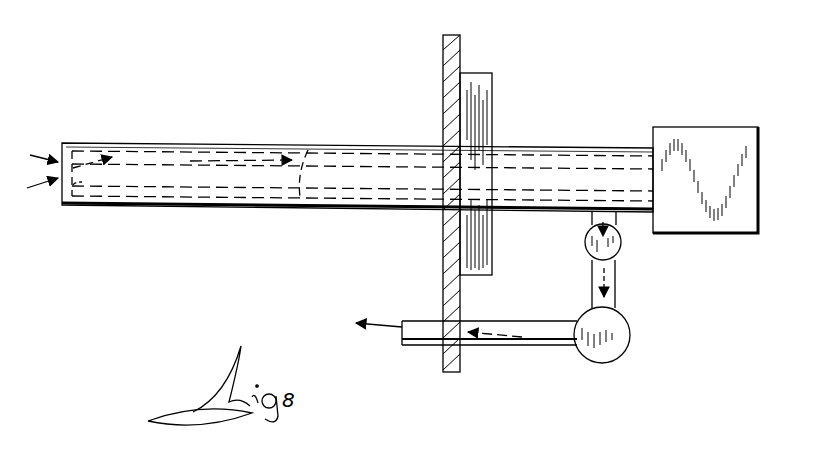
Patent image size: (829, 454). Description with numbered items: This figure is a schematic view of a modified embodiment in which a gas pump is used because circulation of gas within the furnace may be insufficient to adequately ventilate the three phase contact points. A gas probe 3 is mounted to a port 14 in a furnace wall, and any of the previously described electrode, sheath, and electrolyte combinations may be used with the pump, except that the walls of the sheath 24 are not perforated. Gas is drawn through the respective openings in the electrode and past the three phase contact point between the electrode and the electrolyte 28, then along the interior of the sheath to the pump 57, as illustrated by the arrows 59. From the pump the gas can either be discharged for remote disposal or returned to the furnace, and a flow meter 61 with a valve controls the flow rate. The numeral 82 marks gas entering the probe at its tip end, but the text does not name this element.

The gas probe 3 is at (166, 119).
The port 14 is at (443, 52).
The sheath 24 is at (228, 145).
The electrolyte 28 is at (118, 160).
The arrows 59 is at (296, 118).
The flow meter 61 is at (606, 247).
The pump 57 is at (596, 325).
The inlet flow 82 is at (62, 183).